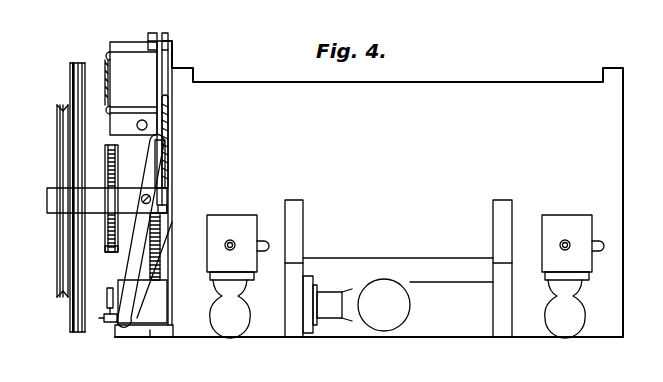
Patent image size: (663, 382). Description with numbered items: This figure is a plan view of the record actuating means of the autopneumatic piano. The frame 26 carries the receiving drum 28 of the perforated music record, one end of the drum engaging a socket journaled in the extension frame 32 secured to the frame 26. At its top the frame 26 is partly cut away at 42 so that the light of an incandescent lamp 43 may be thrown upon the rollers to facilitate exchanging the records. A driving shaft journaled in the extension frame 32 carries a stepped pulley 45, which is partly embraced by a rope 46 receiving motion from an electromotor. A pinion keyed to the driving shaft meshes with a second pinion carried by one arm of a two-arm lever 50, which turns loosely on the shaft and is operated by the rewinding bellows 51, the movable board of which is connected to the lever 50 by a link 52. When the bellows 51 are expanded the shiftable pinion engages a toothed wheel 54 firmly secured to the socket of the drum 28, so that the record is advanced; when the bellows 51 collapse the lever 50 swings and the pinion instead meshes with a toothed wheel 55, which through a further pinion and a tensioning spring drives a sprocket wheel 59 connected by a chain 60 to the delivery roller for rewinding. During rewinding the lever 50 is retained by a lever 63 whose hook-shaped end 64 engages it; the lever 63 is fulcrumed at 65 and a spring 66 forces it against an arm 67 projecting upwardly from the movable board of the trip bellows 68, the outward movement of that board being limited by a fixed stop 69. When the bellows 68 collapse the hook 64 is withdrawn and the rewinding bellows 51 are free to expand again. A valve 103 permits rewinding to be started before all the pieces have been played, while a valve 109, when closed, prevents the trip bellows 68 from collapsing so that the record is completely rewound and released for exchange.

The frame 26 is at (393, 189).
The receiving drum 28 is at (438, 258).
The extension frame 32 is at (107, 200).
The cut-away portion 42 is at (490, 304).
The incandescent lamp 43 is at (356, 304).
The stepped pulley 45 is at (58, 270).
The rope 46 is at (80, 330).
The two-arm lever 50 is at (162, 128).
The rewinding bellows 51 is at (131, 88).
The link 52 is at (163, 90).
The toothed wheel 54 is at (158, 226).
The toothed wheel 55 is at (158, 278).
The sprocket wheel 59 is at (104, 252).
The chain 60 is at (118, 163).
The lever 63 is at (160, 254).
The hook-shaped end 64 is at (160, 143).
The fulcrum 65 is at (151, 198).
The spring 66 is at (142, 230).
The arm 67 is at (110, 292).
The trip bellows 68 is at (150, 327).
The fixed stop 69 is at (108, 322).
The valve 103 is at (238, 276).
The valve 109 is at (573, 276).